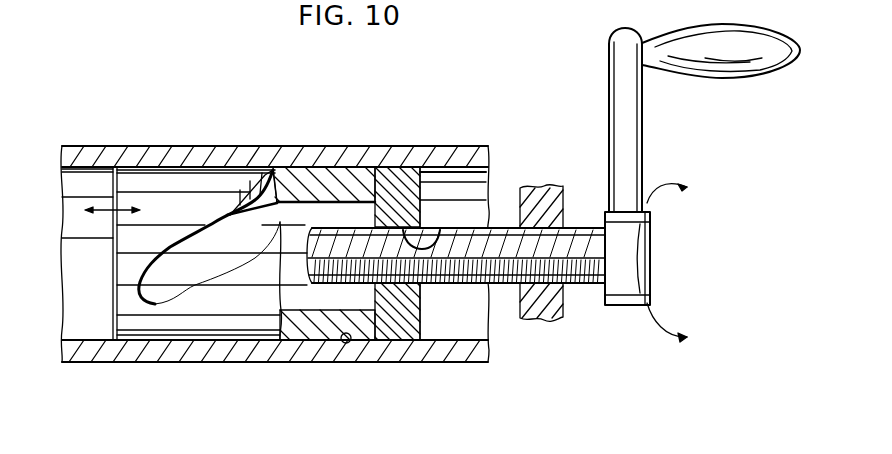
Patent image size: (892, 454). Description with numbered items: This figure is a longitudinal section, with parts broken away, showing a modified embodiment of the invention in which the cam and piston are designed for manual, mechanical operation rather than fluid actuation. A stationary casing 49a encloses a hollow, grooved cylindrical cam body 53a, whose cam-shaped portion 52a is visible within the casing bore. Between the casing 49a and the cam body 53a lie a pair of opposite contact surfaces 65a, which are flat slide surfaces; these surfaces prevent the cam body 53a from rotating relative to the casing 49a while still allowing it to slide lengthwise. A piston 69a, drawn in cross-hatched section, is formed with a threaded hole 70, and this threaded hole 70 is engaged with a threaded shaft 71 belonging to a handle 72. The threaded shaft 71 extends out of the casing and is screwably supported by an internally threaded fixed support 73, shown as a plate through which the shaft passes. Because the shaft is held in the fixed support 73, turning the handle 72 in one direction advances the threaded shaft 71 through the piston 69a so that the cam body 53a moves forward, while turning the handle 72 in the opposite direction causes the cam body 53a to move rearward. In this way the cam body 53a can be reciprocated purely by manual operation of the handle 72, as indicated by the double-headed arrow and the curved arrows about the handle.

The stationary casing 49a is at (397, 147).
The piston member 52a is at (177, 205).
The cam body 53a is at (223, 325).
The contact surfaces 65a is at (327, 167).
The piston 69a is at (396, 332).
The threaded hole 70 is at (447, 227).
The threaded shaft 71 is at (500, 288).
The handle 72 is at (608, 62).
The fixed support 73 is at (563, 318).